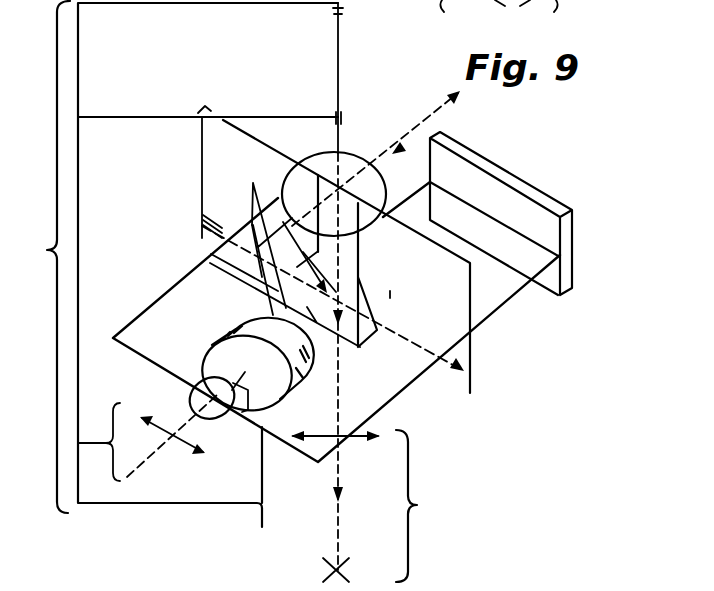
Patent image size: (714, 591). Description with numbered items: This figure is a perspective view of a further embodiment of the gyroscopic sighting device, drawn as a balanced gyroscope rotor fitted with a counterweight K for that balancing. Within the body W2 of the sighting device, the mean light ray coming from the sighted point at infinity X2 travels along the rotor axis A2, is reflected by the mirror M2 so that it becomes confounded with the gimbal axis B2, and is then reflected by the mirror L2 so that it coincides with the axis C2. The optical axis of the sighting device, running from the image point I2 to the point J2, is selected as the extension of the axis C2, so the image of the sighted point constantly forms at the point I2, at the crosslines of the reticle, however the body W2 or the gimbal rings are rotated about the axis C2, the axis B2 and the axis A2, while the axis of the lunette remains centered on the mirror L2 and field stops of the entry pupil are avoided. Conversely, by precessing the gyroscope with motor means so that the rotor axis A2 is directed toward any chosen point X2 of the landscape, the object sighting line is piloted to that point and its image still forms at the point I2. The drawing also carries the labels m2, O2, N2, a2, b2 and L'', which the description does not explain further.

The body of the sighting device W2 is at (38, 257).
The axis C2C2 C2 is at (350, 119).
The point at infinity of the landscape X2 is at (376, 158).
The counterweight K is at (477, 160).
The mirror M2 is at (252, 188).
The mirror holder m2 is at (248, 228).
The axis B2B2 B2 is at (470, 371).
The optical center O2 is at (338, 297).
The motor N2 is at (190, 398).
The axis of the rotor A2 is at (248, 412).
The mirror L2 is at (355, 350).
The optical axis of the sighting device J2 is at (335, 427).
The displacement direction b2 is at (178, 445).
The motor axis a2 is at (128, 478).
The image distance L'' is at (423, 506).
The image point at the reticle crosslines I2 is at (345, 371).